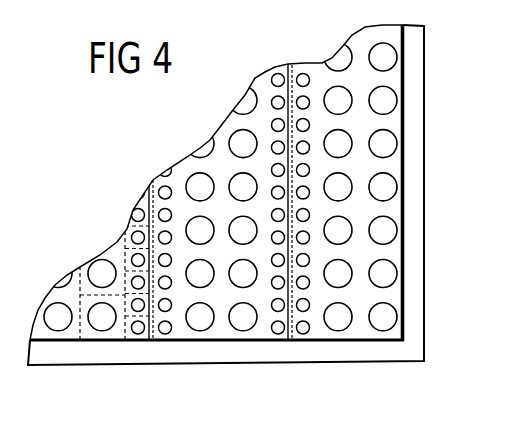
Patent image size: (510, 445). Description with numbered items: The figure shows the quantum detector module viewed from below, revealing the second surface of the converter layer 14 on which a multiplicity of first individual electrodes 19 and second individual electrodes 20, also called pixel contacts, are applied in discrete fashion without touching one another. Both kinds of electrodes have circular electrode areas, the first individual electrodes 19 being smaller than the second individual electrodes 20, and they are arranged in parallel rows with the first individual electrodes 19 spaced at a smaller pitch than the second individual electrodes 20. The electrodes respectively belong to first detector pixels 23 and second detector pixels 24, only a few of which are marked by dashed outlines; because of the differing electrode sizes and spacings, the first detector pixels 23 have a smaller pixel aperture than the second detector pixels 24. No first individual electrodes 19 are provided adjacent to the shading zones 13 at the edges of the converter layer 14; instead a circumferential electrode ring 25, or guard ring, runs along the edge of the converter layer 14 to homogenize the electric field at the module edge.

The shading zone 13 is at (295, 331).
The converter layer 14 is at (415, 351).
The first individual electrode 19 is at (280, 329).
The second individual electrode 20 is at (387, 319).
The first detector pixel 23 is at (148, 343).
The second detector pixel 24 is at (96, 343).
The circumferential electrode ring 25 is at (213, 343).